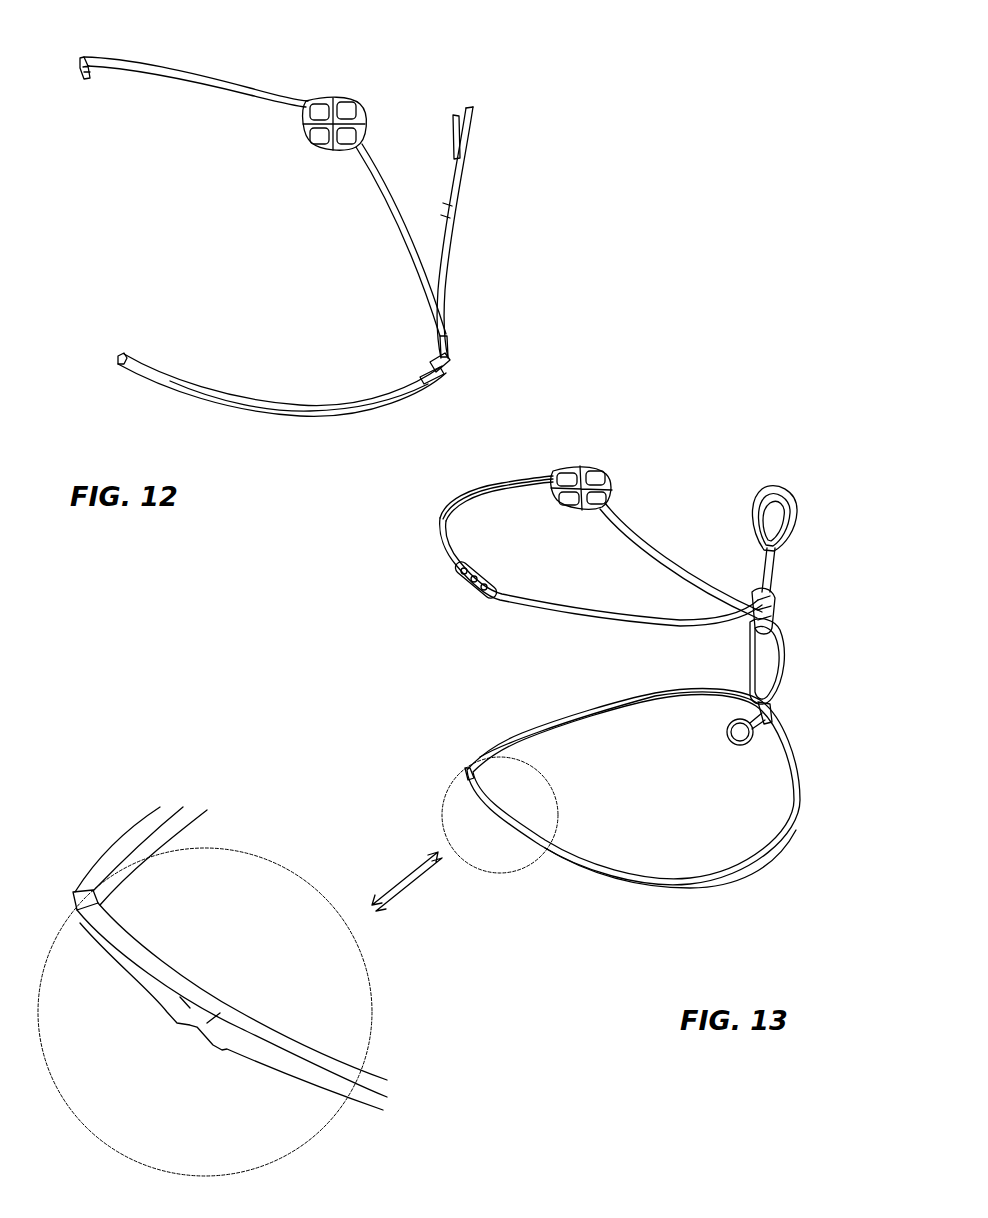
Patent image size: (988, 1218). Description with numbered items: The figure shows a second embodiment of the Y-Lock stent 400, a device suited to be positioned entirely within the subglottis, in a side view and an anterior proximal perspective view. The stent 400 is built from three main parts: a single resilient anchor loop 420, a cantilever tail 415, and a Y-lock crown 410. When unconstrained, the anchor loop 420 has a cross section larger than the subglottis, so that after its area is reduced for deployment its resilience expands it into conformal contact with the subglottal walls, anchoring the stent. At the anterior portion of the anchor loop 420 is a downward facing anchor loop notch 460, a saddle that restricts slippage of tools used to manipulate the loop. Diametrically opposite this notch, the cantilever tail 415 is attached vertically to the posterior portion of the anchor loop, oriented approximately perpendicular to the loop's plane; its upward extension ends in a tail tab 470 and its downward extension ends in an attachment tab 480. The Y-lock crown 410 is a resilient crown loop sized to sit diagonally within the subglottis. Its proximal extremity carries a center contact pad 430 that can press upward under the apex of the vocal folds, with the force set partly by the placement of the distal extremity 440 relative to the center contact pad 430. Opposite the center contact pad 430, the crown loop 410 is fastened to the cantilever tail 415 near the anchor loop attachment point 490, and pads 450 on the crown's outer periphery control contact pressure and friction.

In FIG. 12, the stent 400 is at (570, 207).
In FIG. 13, the stent 400 is at (378, 680).
In FIG. 12, the Y-lock crown 410 is at (250, 85).
In FIG. 13, the Y-lock crown 410 is at (665, 543).
In FIG. 12, the cantilever tail 415 is at (453, 265).
In FIG. 13, the cantilever tail 415 is at (777, 577).
In FIG. 12, the single resilient anchor loop 420 is at (262, 417).
In FIG. 13, the single resilient anchor loop 420 is at (668, 888).
In FIG. 13, the center contact pad 430 is at (480, 608).
In FIG. 13, the distal extremity 440 is at (797, 680).
In FIG. 12, the pads 450 is at (345, 95).
In FIG. 13, the anchor loop notch 460 is at (193, 1030).
In FIG. 13, the tail tab 470 is at (795, 493).
In FIG. 13, the attachment tab 480 is at (725, 755).
In FIG. 13, the anchor loop attachment point 490 is at (778, 708).